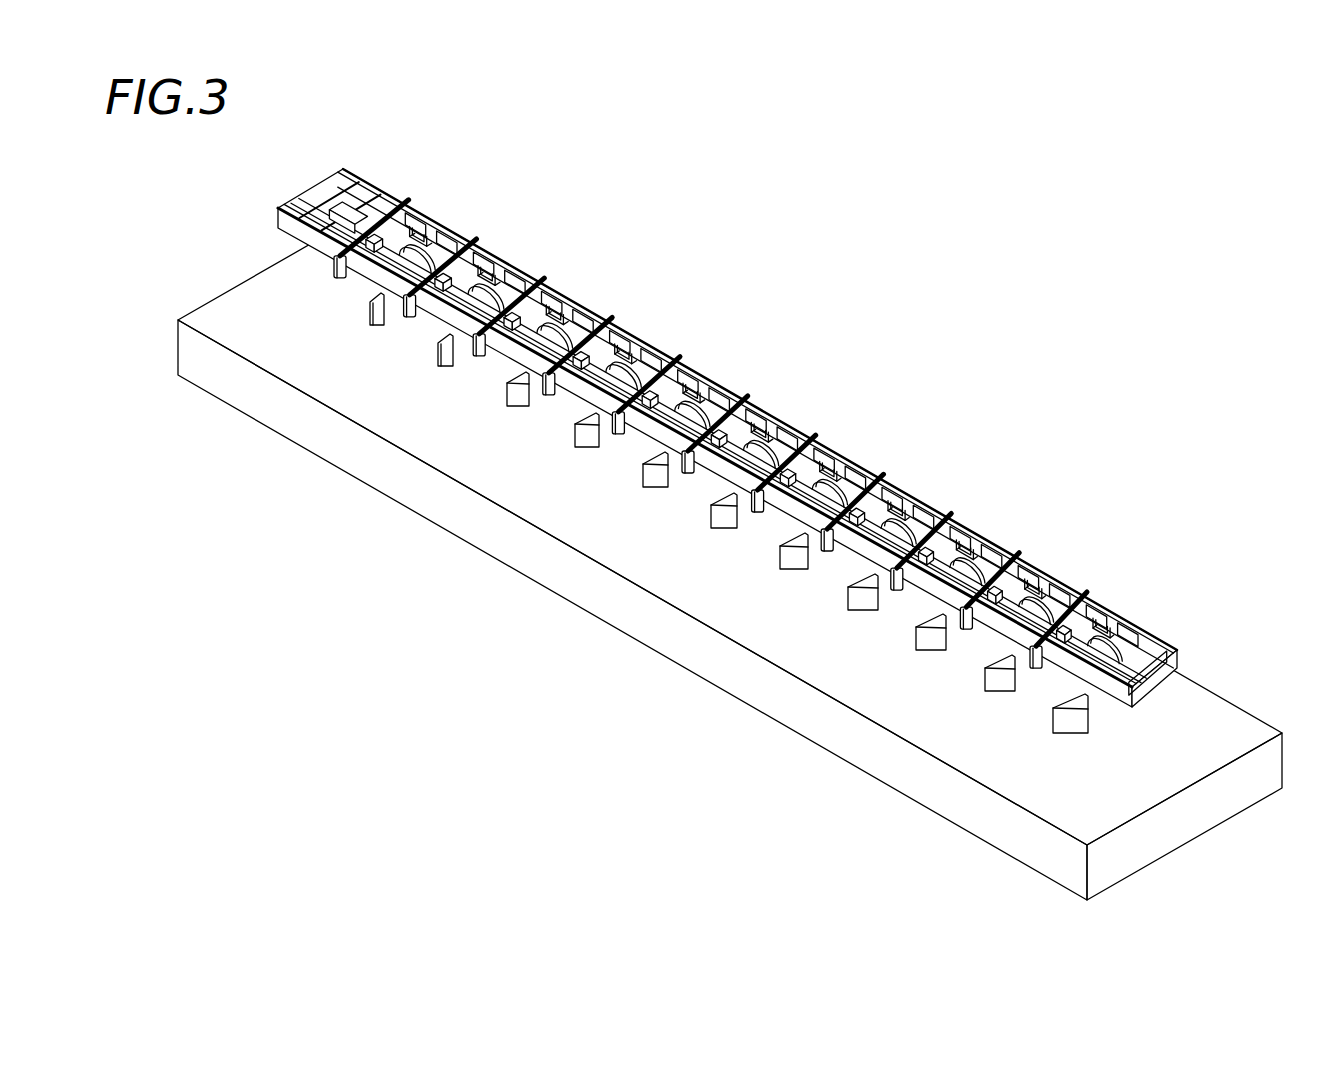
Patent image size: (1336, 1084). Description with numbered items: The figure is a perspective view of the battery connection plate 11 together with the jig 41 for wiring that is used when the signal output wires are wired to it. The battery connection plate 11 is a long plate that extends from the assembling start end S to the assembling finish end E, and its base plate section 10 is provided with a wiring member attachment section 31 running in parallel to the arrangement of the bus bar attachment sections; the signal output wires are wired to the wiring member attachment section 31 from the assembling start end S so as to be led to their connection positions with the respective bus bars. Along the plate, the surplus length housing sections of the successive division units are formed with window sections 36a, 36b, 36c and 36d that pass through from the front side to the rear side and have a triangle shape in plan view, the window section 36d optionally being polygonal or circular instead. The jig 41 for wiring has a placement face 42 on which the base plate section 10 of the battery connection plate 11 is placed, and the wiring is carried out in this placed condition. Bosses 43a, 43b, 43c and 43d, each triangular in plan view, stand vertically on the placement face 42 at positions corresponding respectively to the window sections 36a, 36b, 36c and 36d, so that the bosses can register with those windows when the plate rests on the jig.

The base plate section 10 is at (727, 438).
The battery connection plate 11 is at (774, 434).
The wiring member attachment section 31 is at (339, 175).
The window section 36a is at (443, 230).
The window section 36b is at (650, 348).
The window section 36c is at (923, 505).
The window section 36d is at (1095, 604).
The jig for wiring 41 is at (730, 610).
The placement face 42 is at (730, 526).
The boss 43a is at (348, 407).
The boss 43b is at (559, 528).
The boss 43c is at (881, 711).
The boss 43d is at (1056, 811).
The assembling start end S is at (261, 176).
The assembling finish end E is at (1198, 666).